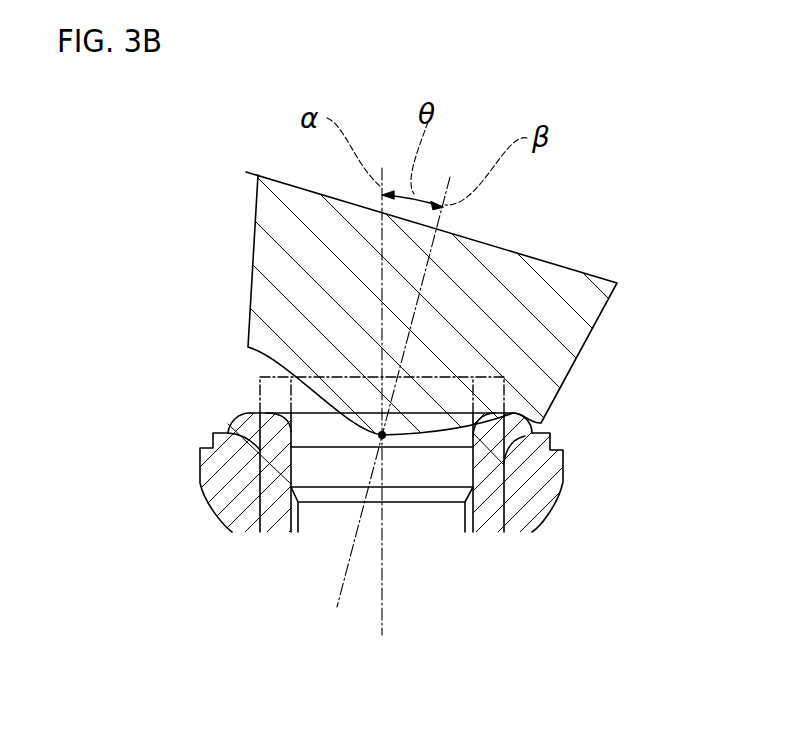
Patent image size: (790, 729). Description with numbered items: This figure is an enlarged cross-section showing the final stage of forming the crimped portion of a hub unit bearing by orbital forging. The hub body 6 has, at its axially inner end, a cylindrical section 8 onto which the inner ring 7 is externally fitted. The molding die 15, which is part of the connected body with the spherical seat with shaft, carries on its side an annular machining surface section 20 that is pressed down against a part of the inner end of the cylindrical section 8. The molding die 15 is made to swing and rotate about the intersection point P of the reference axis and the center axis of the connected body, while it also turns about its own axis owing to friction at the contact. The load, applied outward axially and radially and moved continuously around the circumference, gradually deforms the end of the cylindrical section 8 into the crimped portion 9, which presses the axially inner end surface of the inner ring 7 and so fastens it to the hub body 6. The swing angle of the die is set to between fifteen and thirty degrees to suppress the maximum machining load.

The molding die 15 is at (520, 290).
The cylindrical section 8 is at (270, 388).
The crimped portion 9 is at (228, 424).
The inner ring 7 is at (236, 475).
The machining surface section 20 is at (515, 428).
The hub body 6 is at (492, 500).
The intersection point P is at (382, 435).